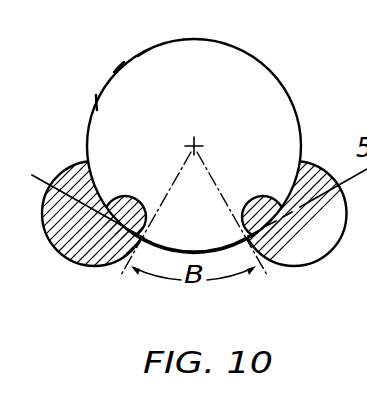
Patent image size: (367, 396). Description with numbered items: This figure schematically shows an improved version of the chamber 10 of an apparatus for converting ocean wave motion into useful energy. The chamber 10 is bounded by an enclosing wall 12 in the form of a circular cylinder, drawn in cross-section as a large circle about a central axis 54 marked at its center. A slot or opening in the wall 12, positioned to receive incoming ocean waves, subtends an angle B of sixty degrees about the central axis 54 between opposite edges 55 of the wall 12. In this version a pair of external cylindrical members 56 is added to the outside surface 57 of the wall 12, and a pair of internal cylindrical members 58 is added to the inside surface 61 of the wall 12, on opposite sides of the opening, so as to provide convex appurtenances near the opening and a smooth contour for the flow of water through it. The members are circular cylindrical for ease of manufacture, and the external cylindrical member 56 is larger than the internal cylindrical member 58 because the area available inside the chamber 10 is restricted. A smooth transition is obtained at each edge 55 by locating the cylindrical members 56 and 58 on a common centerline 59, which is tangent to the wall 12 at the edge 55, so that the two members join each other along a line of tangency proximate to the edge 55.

The chamber 10 is at (209, 93).
The enclosing wall 12 is at (143, 52).
The central axis 54 is at (198, 141).
The edges 55 is at (241, 238).
The external cylindrical members 56 is at (96, 268).
The outside surface 57 is at (118, 68).
The internal cylindrical members 58 is at (127, 198).
The common centerline 59 is at (33, 176).
The inside surface 61 is at (97, 103).